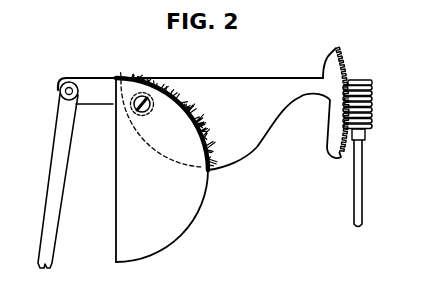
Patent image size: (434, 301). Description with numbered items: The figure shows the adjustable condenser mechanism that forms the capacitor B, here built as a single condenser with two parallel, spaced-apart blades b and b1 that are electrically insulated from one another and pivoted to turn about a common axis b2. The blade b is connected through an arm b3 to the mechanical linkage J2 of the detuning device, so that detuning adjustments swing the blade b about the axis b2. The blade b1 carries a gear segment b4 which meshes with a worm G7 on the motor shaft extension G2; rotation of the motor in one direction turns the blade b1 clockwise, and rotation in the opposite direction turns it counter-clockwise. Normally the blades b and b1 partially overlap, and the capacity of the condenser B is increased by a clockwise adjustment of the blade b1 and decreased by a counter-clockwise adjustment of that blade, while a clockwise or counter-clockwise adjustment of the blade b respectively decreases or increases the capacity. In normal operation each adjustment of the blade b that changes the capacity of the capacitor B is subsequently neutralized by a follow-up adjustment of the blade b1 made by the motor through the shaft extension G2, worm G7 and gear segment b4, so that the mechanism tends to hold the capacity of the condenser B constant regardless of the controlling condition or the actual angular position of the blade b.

The blade b is at (167, 240).
The blade b1 is at (257, 148).
The common axis b2 is at (143, 96).
The arm b3 is at (90, 90).
The gear segment b4 is at (334, 56).
The mechanical linkage J2 is at (50, 189).
The worm G7 is at (368, 103).
The motor shaft extension G2 is at (361, 192).
The capacitor B is at (254, 211).